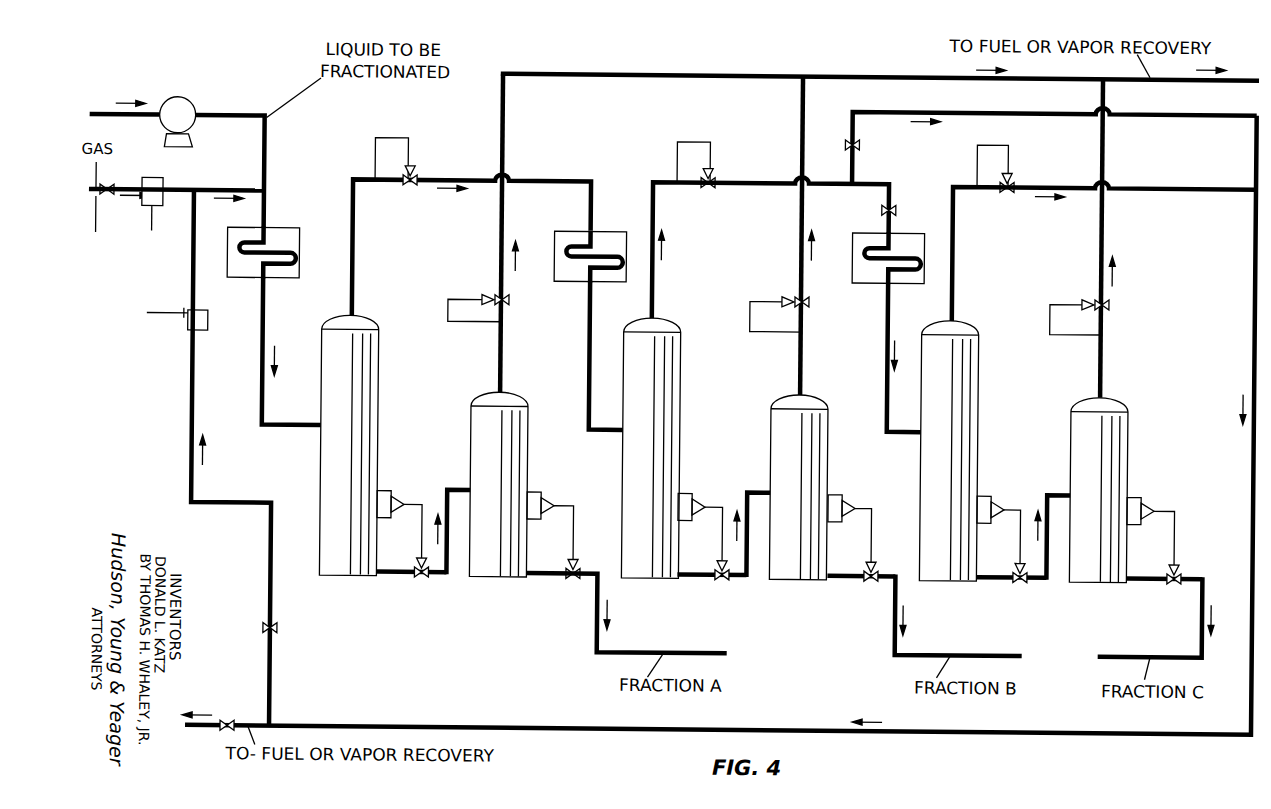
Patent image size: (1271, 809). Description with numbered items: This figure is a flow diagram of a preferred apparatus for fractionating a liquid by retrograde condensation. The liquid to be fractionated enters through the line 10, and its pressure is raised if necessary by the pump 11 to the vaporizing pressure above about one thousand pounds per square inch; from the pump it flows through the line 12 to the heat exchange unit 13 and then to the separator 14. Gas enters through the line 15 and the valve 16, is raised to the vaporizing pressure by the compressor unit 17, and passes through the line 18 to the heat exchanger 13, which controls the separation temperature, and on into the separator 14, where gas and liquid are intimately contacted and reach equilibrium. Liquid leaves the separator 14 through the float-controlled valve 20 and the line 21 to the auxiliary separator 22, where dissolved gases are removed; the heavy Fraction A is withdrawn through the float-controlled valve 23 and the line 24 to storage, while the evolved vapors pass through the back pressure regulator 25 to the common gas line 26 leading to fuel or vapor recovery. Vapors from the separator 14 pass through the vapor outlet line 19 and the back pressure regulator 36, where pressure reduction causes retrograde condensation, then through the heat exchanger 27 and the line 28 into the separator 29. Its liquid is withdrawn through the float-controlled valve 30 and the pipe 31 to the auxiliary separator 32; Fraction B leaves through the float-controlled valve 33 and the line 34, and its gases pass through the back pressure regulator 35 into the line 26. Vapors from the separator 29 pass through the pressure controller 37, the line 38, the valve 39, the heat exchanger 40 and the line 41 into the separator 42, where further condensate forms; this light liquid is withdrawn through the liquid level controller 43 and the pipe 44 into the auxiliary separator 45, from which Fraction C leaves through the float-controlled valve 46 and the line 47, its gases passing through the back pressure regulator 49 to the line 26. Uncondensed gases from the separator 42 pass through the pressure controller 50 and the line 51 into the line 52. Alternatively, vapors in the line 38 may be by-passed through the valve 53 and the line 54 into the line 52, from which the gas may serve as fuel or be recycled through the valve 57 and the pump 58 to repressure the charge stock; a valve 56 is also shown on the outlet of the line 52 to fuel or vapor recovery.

The line 10 is at (107, 118).
The pump 11 is at (177, 107).
The line 12 is at (235, 114).
The heat exchange unit 13 is at (283, 228).
The separator 14 is at (370, 388).
The line 15 is at (95, 217).
The valve 16 is at (112, 189).
The compressor unit 17 is at (158, 197).
The line 18 is at (218, 191).
The vapor outlet line 19 is at (354, 247).
The float-controlled valve 20 is at (421, 580).
The line 21 is at (447, 489).
The separator 22 is at (478, 421).
The float-controlled valve 23 is at (572, 581).
The line 24 is at (643, 650).
The back pressure regulator 25 is at (482, 297).
The line 26 is at (609, 73).
The heat exchanger 27 is at (555, 233).
The line 28 is at (585, 336).
The separator 29 is at (668, 382).
The float-controlled valve 30 is at (724, 580).
The pipe 31 is at (747, 489).
The auxiliary separator 32 is at (820, 444).
The float-controlled valve 33 is at (870, 580).
The line 34 is at (927, 650).
The back pressure regulator 35 is at (783, 298).
The back pressure regulator 36 is at (413, 177).
The pressure controller 37 is at (711, 174).
The line 38 is at (763, 179).
The valve 39 is at (894, 208).
The heat exchanger 40 is at (857, 279).
The line 41 is at (882, 364).
The separator 42 is at (985, 372).
The liquid level controller 43 is at (1023, 580).
The pipe 44 is at (1046, 488).
The auxiliary separator 45 is at (1070, 424).
The float-controlled valve 46 is at (1174, 580).
The line 47 is at (1142, 650).
The back pressure regulator 49 is at (1082, 299).
The pressure controller 50 is at (1010, 175).
The line 51 is at (1141, 186).
The line 52 is at (1249, 329).
The valve 53 is at (858, 145).
The line 54 is at (1003, 109).
The valve 56 is at (231, 722).
The valve 57 is at (280, 633).
The pump 58 is at (197, 334).